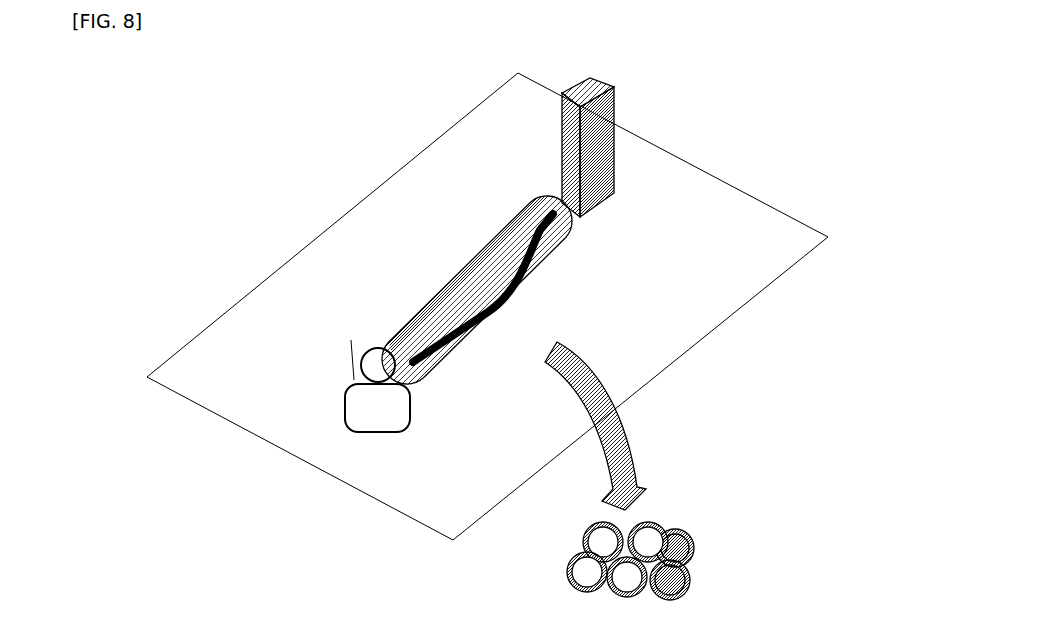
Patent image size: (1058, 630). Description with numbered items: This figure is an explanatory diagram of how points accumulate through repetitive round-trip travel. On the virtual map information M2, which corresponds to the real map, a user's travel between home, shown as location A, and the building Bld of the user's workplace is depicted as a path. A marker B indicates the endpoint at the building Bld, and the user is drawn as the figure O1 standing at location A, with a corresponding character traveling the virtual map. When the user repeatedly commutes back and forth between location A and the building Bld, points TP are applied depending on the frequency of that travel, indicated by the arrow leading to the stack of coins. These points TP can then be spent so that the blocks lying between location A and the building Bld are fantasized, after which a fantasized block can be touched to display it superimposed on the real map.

The virtual map information M2 is at (747, 195).
The building Bld is at (600, 82).
The location A is at (401, 321).
The end point B is at (537, 193).
The user object (10) O1 is at (360, 432).
The points TP is at (670, 562).